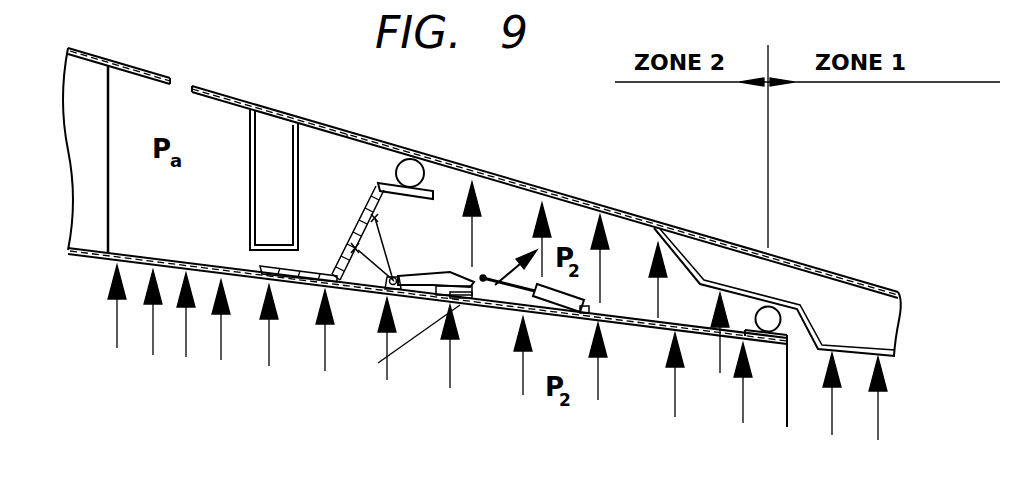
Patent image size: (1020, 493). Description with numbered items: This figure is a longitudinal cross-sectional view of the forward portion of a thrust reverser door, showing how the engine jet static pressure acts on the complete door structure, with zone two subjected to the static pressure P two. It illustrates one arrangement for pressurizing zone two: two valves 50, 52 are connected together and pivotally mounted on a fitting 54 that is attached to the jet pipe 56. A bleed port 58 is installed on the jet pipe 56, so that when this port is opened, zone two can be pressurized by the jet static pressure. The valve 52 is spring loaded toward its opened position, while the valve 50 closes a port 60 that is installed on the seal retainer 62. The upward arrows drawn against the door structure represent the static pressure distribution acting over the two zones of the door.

The valve 50 is at (380, 231).
The valve 52 is at (474, 278).
The fitting 54 is at (400, 276).
The jet pipe 56 is at (641, 329).
The bleed port 58 is at (465, 310).
The port 60 is at (356, 246).
The seal retainer 62 is at (374, 218).